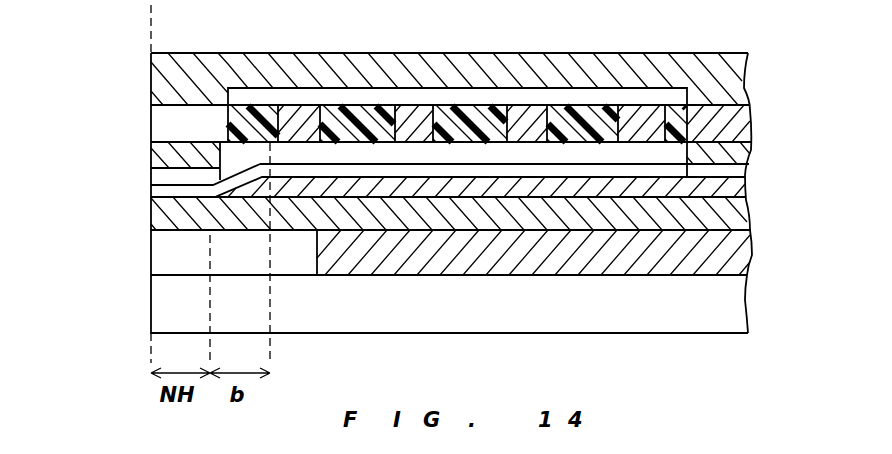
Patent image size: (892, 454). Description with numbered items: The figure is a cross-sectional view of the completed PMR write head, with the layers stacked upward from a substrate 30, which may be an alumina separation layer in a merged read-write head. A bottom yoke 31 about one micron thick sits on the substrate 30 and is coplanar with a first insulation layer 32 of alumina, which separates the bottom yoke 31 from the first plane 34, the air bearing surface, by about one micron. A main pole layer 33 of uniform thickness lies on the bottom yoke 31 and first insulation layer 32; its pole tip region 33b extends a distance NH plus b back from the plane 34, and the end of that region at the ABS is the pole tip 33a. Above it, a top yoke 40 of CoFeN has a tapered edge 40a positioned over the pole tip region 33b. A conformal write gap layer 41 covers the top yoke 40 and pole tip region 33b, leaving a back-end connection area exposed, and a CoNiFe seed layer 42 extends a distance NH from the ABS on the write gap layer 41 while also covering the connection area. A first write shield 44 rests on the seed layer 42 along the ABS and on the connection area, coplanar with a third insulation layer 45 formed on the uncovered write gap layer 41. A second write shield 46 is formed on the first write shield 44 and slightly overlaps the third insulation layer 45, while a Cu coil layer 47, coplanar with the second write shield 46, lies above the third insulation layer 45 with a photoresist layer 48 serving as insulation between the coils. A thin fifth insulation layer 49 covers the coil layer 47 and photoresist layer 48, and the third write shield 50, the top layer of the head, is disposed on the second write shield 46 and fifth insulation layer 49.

The substrate 30 is at (735, 305).
The bottom yoke 31 is at (738, 255).
The first insulation layer 32 is at (172, 262).
The main pole layer 33 is at (743, 212).
The pole tip 33a is at (153, 220).
The pole tip region 33b is at (177, 215).
The first plane 34 is at (151, 31).
The top yoke 40 is at (747, 187).
The tapered edge 40a is at (242, 185).
The write gap layer 41 is at (162, 191).
The seed layer 42 is at (162, 177).
The first write shield 44 is at (162, 152).
The third insulation layer 45 is at (563, 155).
The second write shield 46 is at (162, 128).
The coil layer 47 is at (297, 120).
The photoresist layer 48 is at (247, 118).
The fifth insulation layer 49 is at (504, 100).
The third write shield 50 is at (737, 73).